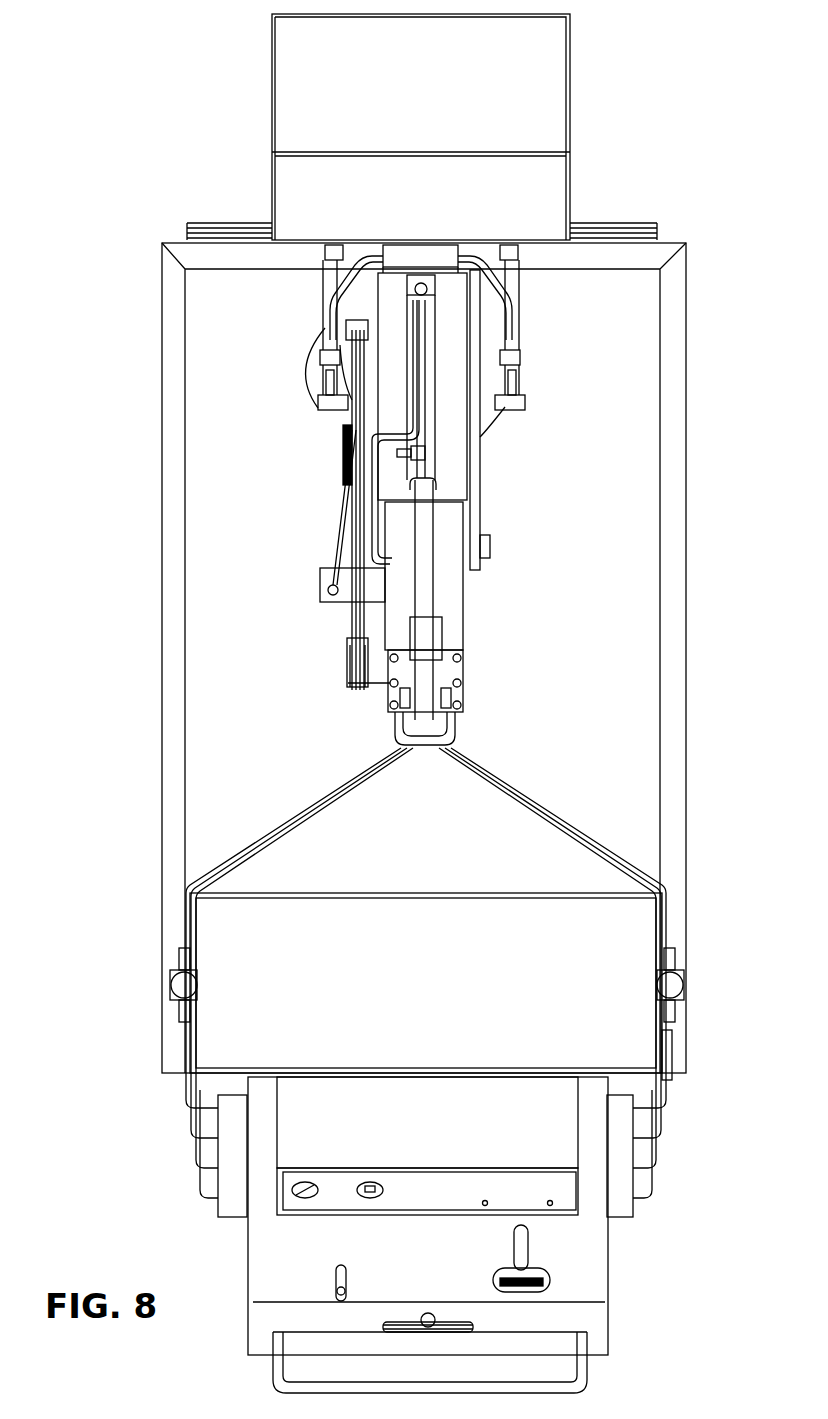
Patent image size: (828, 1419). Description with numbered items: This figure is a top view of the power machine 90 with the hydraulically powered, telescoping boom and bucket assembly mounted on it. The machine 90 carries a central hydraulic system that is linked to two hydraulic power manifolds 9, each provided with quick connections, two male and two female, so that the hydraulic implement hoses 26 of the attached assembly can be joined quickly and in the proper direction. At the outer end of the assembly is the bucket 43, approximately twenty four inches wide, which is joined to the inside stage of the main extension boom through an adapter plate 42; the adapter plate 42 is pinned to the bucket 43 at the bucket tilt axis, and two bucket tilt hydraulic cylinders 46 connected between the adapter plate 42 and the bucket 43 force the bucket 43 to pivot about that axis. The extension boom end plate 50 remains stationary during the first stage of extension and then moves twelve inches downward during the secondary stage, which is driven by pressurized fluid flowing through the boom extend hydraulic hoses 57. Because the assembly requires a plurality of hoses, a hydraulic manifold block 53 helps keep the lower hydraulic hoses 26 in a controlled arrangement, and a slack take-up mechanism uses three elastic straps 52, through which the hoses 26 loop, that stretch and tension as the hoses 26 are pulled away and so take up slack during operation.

The hydraulic power manifold 9 is at (232, 1210).
The hydraulic implement hoses 26 is at (542, 808).
The adapter plate 42 is at (320, 408).
The bucket 43 is at (555, 78).
The bucket tilt hydraulic cylinders 46 is at (325, 330).
The extension boom end plate 50 is at (388, 698).
The elastic straps 52 is at (400, 737).
The hydraulic manifold block 53 is at (326, 583).
The boom extend hydraulic hoses 57 is at (423, 407).
The machine 90 is at (148, 993).